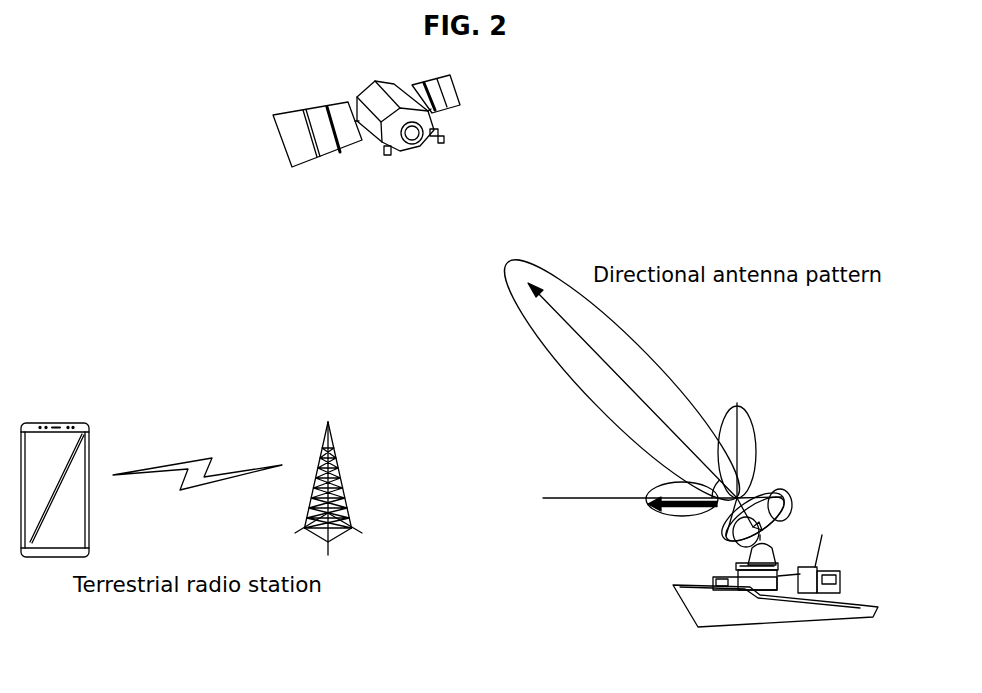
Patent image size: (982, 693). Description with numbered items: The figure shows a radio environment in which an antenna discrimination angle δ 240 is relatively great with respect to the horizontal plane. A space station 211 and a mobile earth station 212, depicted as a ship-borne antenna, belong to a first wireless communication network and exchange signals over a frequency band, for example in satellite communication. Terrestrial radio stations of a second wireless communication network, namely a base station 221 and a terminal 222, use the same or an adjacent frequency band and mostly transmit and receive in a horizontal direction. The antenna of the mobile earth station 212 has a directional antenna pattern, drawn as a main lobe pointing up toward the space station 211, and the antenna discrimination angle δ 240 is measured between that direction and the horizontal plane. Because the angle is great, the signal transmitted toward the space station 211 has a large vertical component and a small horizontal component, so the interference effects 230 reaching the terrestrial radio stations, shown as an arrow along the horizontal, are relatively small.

The space station 211 is at (381, 137).
The mobile earth station 212 is at (771, 574).
The base station 221 is at (306, 522).
The terminal 222 is at (53, 420).
The interference effects 230 is at (653, 507).
The antenna discrimination angle δ 240 is at (737, 498).